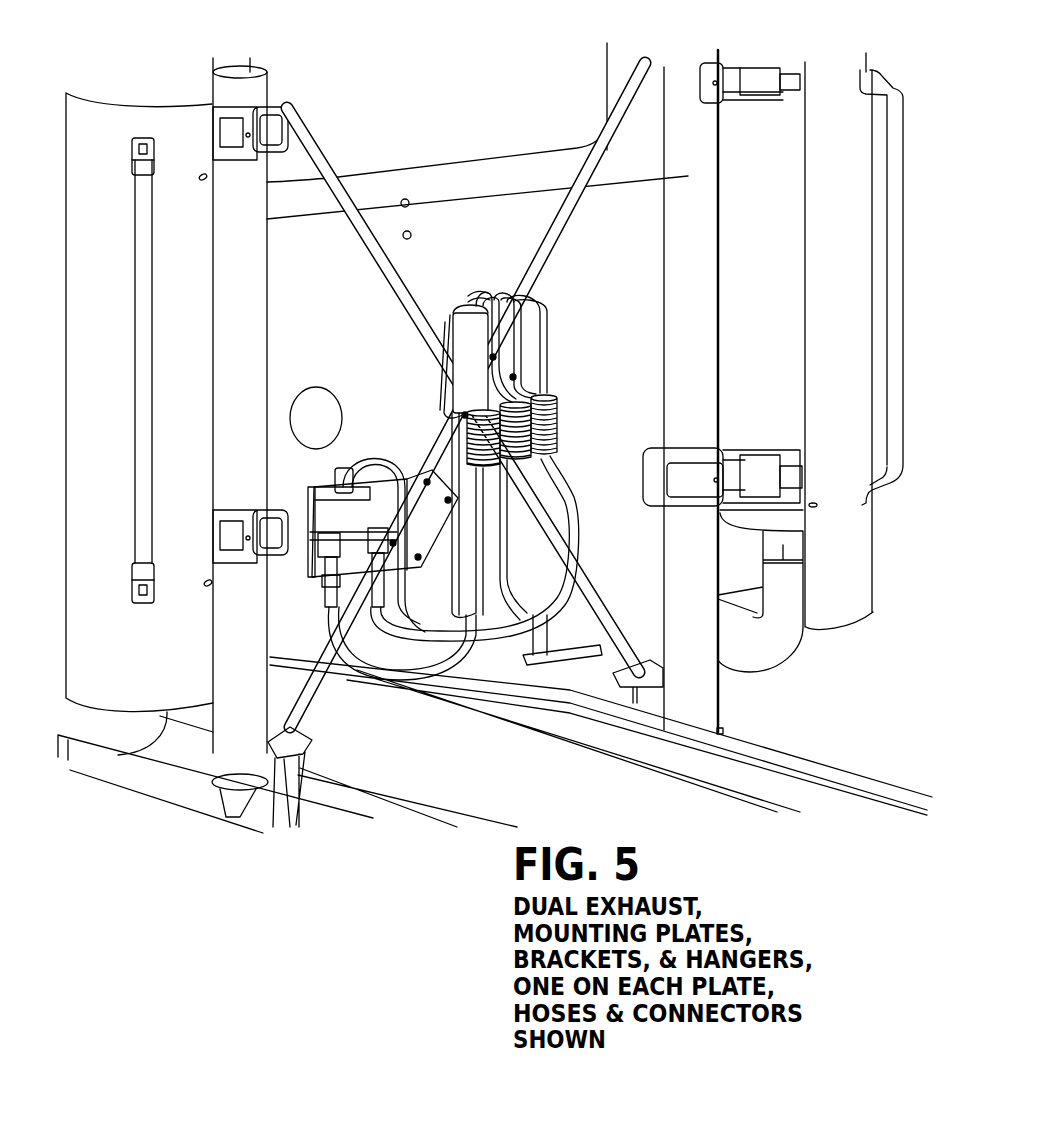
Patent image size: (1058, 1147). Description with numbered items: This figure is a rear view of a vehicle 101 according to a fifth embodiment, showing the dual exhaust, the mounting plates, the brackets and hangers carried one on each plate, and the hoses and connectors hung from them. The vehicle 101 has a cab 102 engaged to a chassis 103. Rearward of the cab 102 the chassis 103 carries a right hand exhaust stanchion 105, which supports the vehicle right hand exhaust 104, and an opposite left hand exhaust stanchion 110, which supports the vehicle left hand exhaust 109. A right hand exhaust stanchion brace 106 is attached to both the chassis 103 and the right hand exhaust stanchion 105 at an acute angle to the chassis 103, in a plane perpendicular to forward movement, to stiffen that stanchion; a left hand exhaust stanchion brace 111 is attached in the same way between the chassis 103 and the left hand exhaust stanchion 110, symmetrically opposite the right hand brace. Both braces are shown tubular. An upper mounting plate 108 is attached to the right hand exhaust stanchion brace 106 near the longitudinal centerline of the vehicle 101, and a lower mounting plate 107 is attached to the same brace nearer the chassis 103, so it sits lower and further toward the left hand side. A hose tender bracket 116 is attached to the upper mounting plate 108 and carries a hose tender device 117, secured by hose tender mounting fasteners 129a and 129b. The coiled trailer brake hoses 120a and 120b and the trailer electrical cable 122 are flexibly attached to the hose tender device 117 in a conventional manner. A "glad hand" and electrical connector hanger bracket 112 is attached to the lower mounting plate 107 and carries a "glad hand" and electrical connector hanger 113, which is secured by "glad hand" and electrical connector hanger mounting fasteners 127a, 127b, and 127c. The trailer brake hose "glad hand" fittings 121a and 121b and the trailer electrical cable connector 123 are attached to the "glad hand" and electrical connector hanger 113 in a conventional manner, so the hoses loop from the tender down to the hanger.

The vehicle 101 is at (468, 212).
The cab 102 is at (496, 202).
The chassis 103 is at (555, 715).
The vehicle right hand exhaust 104 is at (693, 176).
The right hand exhaust stanchion 105 is at (758, 153).
The right hand exhaust stanchion brace 106 is at (578, 212).
The lower mounting plate 107 is at (418, 476).
The upper mounting plate 108 is at (452, 424).
The vehicle left hand exhaust 109 is at (216, 283).
The left hand exhaust stanchion 110 is at (238, 304).
The left hand exhaust stanchion brace 111 is at (398, 297).
The "glad hand" and electrical connector hanger bracket 112 is at (422, 491).
The "glad hand" and electrical connector hanger 113 is at (303, 550).
The hose tender bracket 116 is at (470, 379).
The hose tender device 117 is at (475, 292).
The coiled trailer brake hose 120a is at (560, 424).
The coiled trailer brake hose 120b is at (500, 470).
The trailer brake hose "glad hand" fitting 121a is at (317, 592).
The trailer brake hose "glad hand" fitting 121b is at (348, 613).
The trailer electrical cable 122 is at (528, 403).
The trailer electrical cable connector 123 is at (318, 518).
The "glad hand" and electrical connector hanger mounting fastener 127a is at (300, 552).
The "glad hand" and electrical connector hanger mounting fastener 127b is at (335, 477).
The "glad hand" and electrical connector hanger mounting fastener 127c is at (373, 601).
The hose tender mounting fastener 129a is at (506, 285).
The hose tender mounting fastener 129b is at (491, 286).